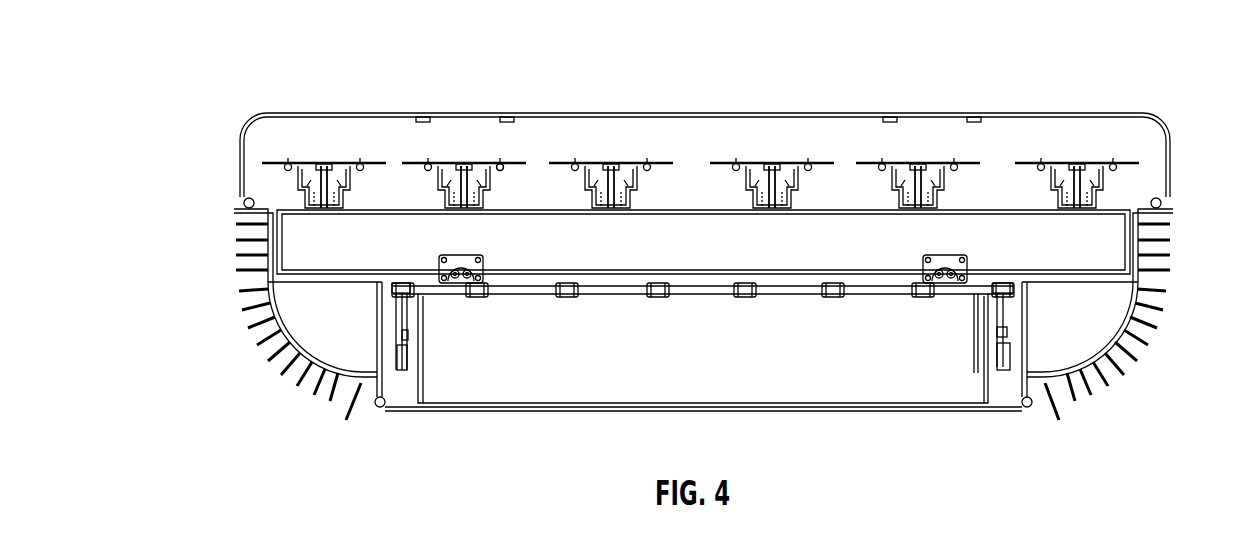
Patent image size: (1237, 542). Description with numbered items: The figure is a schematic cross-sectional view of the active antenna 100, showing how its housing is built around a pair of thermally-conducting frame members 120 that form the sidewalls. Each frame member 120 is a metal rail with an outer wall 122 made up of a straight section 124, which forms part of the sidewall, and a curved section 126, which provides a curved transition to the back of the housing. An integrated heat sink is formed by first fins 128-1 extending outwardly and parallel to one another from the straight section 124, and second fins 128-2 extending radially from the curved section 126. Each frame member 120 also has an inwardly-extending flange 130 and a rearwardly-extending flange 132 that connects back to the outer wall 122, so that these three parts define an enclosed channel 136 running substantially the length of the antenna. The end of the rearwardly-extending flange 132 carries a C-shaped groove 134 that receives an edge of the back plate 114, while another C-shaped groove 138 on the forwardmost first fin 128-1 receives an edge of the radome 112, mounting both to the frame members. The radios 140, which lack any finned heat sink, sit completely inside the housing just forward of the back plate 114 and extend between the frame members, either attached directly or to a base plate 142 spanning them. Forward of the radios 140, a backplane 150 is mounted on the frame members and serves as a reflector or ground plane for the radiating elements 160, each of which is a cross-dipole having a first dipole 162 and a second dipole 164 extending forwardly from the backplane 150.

The active antenna 100 is at (238, 94).
The radome 112 is at (703, 115).
The back plate 114 is at (873, 411).
The thermally-conducting frame member 120 is at (662, 354).
The outer wall 122 is at (308, 301).
The straight section 124 is at (266, 222).
The curved section 126 is at (1110, 330).
The first fins 128-1 is at (238, 258).
The second fins 128-2 is at (355, 407).
The inwardly-extending flange 130 is at (327, 275).
The rearwardly-extending flange 132 is at (372, 315).
The C-shaped groove 134 is at (374, 413).
The enclosed channel 136 is at (1056, 350).
The C-shaped groove 138 is at (1162, 184).
The radio 140 is at (550, 390).
The base plate 142 is at (717, 287).
The backplane 150 is at (668, 213).
The radiating element 160 is at (345, 162).
The first dipole 162 is at (417, 162).
The second dipole 164 is at (508, 163).